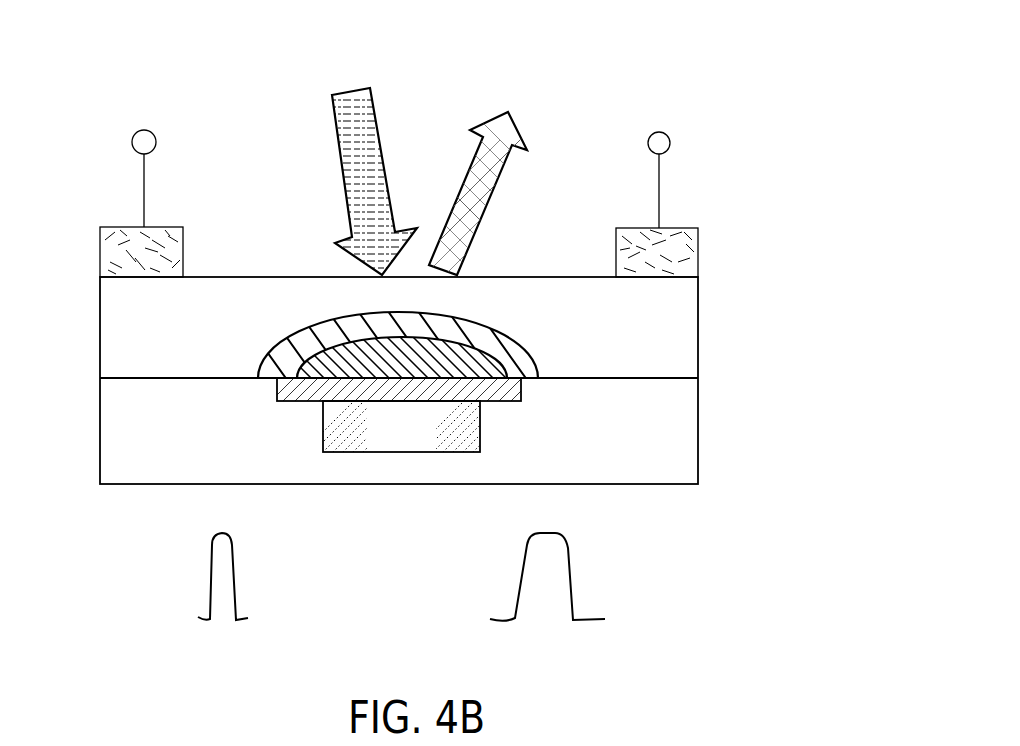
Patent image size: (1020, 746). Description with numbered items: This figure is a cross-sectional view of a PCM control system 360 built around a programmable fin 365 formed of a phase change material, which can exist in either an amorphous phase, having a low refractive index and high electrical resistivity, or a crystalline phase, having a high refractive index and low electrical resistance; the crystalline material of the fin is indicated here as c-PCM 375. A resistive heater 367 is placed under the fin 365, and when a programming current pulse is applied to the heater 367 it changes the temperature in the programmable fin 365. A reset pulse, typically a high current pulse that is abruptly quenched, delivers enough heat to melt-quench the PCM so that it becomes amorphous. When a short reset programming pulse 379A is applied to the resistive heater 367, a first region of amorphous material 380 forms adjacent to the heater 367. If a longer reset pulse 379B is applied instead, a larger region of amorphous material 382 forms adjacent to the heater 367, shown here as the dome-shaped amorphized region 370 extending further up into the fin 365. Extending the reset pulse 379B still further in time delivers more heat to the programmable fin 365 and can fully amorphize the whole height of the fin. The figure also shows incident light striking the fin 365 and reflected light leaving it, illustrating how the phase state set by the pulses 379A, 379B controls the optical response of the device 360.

The optical phase change memory device 360 is at (588, 83).
The programmable fin 365 is at (685, 365).
The resistive heater 367 is at (467, 412).
The amorphized PCM region 370 is at (510, 368).
The crystalline PCM layer 375 is at (112, 310).
The first region of amorphous material 380 is at (441, 355).
The larger region of amorphous material 382 is at (314, 316).
The short reset programming pulse 379A is at (133, 655).
The longer reset pulse 379B is at (633, 657).